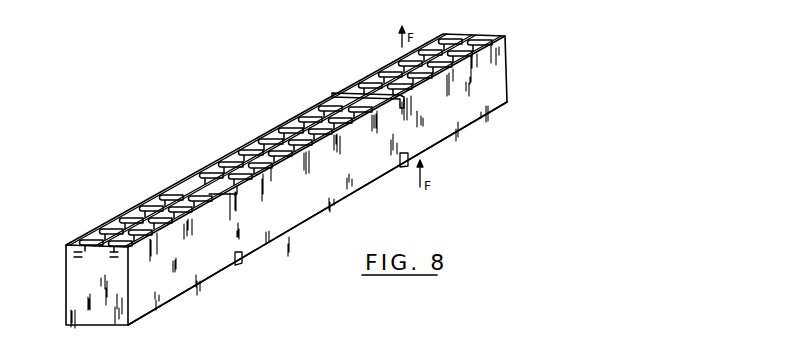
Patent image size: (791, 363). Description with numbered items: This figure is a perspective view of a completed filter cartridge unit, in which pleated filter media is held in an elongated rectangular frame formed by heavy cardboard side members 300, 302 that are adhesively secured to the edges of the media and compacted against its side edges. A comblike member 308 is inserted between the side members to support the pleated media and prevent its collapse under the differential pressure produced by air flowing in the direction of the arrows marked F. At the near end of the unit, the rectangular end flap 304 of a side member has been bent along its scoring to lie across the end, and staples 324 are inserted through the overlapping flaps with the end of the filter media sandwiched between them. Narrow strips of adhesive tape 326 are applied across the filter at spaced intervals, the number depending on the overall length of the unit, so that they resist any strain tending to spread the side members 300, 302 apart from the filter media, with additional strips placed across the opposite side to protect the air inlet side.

The side member 300 is at (262, 138).
The side member 302 is at (287, 198).
The end flap 304 is at (102, 312).
The comblike member 308 is at (160, 193).
The staples 324 is at (80, 265).
The adhesive tape strips 326 is at (342, 94).